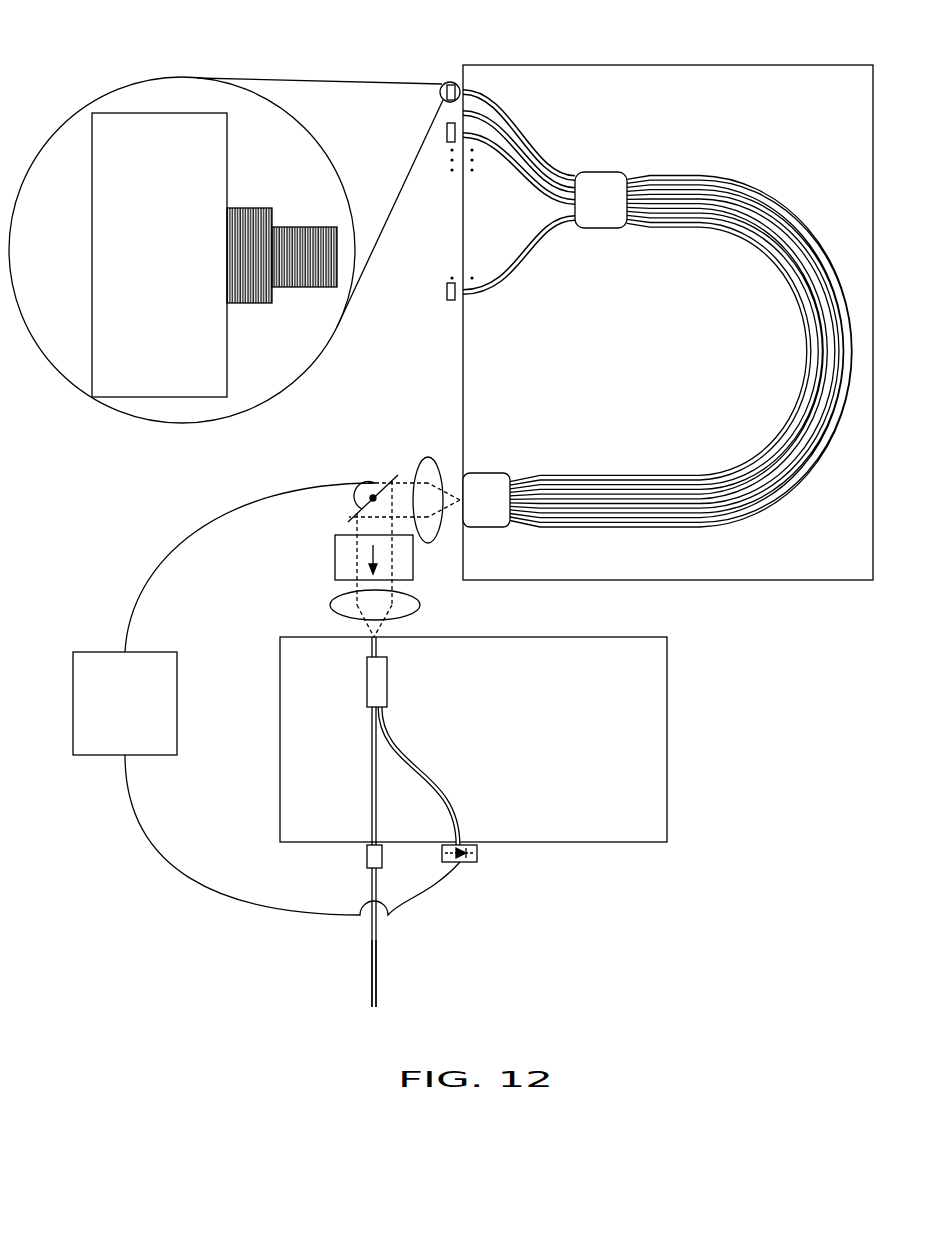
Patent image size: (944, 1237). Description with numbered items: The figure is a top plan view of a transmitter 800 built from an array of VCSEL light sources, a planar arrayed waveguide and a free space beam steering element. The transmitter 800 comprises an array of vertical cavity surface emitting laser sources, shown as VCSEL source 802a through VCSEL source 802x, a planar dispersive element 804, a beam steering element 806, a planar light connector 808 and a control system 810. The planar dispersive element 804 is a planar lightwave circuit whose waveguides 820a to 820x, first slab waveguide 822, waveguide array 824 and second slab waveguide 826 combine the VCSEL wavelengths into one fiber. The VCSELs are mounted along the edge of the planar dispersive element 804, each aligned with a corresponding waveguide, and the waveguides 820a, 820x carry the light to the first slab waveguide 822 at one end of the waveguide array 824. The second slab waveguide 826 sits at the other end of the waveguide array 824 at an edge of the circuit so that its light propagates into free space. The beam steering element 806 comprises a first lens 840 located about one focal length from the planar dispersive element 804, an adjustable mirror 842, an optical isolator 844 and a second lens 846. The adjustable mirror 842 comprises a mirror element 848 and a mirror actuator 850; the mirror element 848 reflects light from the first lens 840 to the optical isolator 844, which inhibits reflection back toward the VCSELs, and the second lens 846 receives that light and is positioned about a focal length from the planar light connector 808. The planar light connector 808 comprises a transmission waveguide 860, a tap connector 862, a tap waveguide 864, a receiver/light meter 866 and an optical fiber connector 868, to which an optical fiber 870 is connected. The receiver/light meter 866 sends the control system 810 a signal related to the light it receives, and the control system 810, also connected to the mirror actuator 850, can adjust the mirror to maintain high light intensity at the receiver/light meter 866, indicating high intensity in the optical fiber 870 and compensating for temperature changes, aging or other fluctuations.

The transmitter 800 is at (118, 470).
The VCSEL source 802a is at (173, 112).
The VCSEL source 802x is at (446, 292).
The planar dispersive element 804 is at (873, 458).
The beam steering element 806 is at (348, 428).
The planar light connector 808 is at (667, 750).
The control system 810 is at (73, 713).
The waveguide 820a is at (541, 148).
The waveguide 820x is at (490, 291).
The first slab waveguide 822 is at (595, 230).
The waveguide array 824 is at (788, 212).
The second slab waveguide 826 is at (483, 473).
The first lens 840 is at (441, 457).
The adjustable mirror 842 is at (343, 497).
The optical isolator 844 is at (335, 563).
The second lens 846 is at (418, 607).
The mirror element 848 is at (384, 487).
The mirror actuator 850 is at (373, 483).
The transmission waveguide 860 is at (370, 783).
The tap connector 862 is at (387, 698).
The tap waveguide 864 is at (438, 783).
The receiver/light meter 866 is at (460, 863).
The optical fiber connector 868 is at (367, 853).
The optical fiber 870 is at (372, 940).